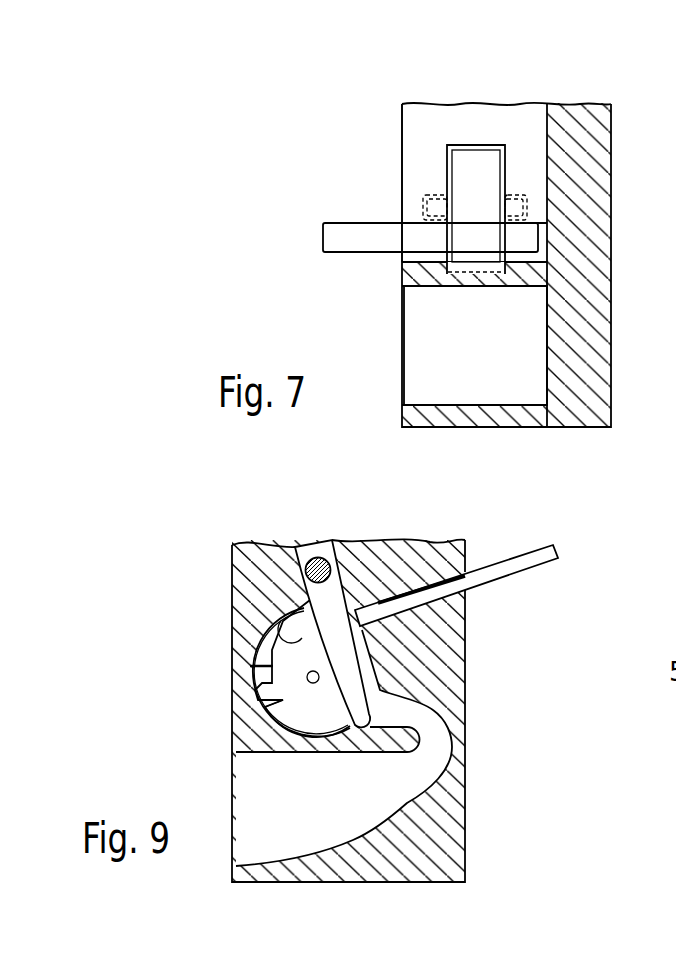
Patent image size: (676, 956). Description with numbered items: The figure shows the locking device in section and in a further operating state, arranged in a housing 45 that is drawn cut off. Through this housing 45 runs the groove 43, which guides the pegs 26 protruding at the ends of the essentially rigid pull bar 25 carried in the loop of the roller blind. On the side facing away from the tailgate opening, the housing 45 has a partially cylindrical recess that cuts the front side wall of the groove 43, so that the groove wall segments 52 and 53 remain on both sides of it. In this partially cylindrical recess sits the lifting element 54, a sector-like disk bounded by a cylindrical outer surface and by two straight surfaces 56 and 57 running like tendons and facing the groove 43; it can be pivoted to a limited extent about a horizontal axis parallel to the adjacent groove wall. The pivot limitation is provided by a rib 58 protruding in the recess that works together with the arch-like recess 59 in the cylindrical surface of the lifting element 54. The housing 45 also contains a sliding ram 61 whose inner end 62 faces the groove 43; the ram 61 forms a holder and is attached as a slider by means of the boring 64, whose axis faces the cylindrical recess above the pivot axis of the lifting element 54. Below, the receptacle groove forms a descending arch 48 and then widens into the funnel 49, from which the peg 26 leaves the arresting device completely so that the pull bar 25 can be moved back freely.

In FIG. 7, the pull bar 25 is at (348, 243).
In FIG. 9, the peg 26 is at (315, 557).
In FIG. 7, the groove 43 is at (473, 122).
In FIG. 7, the housing 45 is at (578, 408).
In FIG. 9, the housing 45 is at (442, 862).
In FIG. 9, the arch 48 is at (433, 747).
In FIG. 7, the funnel 49 is at (455, 373).
In FIG. 9, the funnel 49 is at (258, 838).
In FIG. 7, the groove wall segment 52 is at (418, 172).
In FIG. 7, the groove wall segment 53 is at (523, 183).
In FIG. 9, the lifting element 54 is at (273, 648).
In FIG. 9, the straight surface 56 is at (378, 710).
In FIG. 7, the straight surface 57 is at (470, 167).
In FIG. 9, the straight surface 57 is at (258, 612).
In FIG. 9, the rib 58 is at (260, 677).
In FIG. 9, the arch-like recess 59 is at (257, 703).
In FIG. 9, the sliding ram 61 is at (492, 568).
In FIG. 9, the inner end 62 is at (385, 615).
In FIG. 9, the boring 64 is at (457, 620).